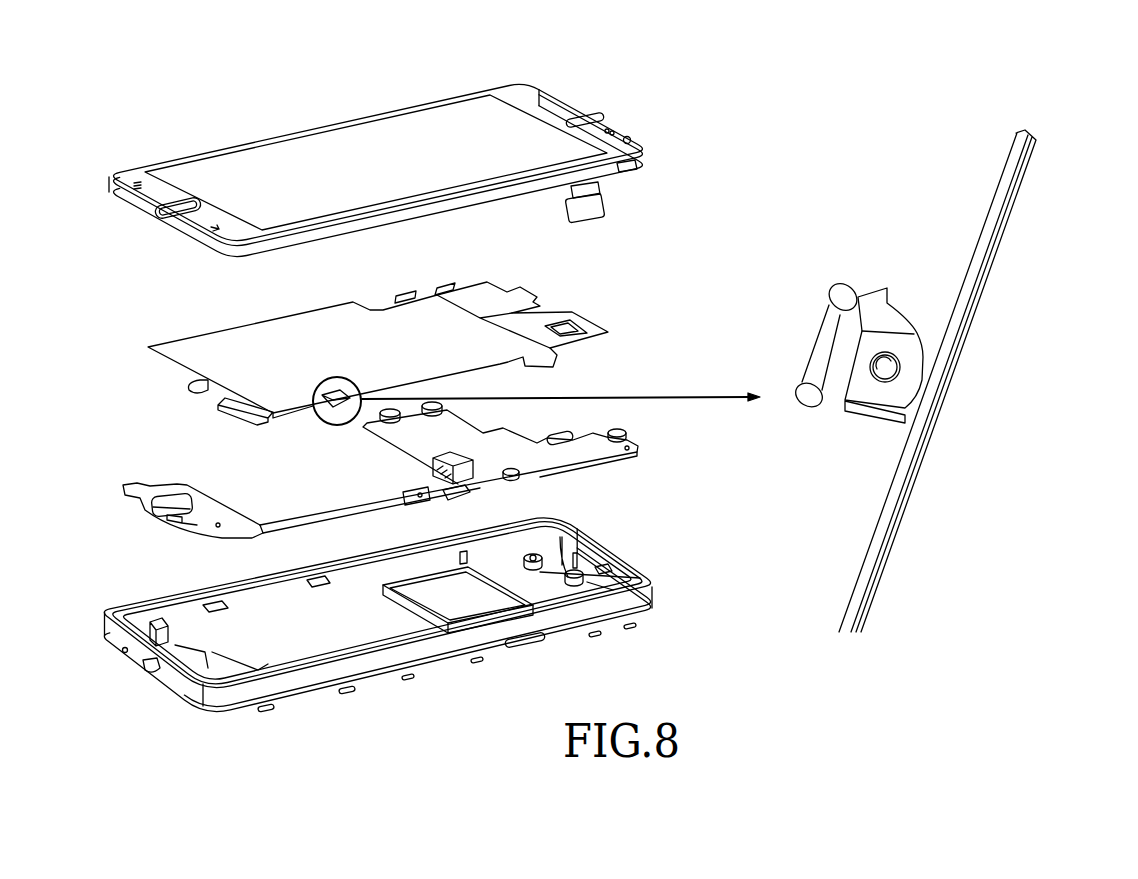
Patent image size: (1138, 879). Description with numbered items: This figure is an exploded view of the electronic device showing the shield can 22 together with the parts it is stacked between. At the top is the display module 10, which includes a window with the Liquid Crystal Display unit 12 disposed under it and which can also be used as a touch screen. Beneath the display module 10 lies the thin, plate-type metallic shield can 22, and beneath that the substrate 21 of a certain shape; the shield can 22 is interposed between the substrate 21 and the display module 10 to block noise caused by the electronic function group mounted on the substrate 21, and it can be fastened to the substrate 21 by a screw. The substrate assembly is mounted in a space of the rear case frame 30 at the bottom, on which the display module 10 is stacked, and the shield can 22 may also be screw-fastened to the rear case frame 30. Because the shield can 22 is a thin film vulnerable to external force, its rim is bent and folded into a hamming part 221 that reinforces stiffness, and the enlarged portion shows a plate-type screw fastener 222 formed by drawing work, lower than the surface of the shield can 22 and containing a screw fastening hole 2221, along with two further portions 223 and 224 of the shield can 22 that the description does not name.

The display module 10 is at (352, 111).
The Liquid Crystal Display (LCD) unit 12 is at (431, 208).
The substrate 21 is at (560, 453).
The shield can 22 is at (203, 362).
The hamming part 221 is at (1006, 198).
The screw fastener 222 is at (915, 357).
The screw fastening hole 2221 is at (887, 367).
The bent portion 223 is at (935, 320).
The protrusion 224 is at (850, 292).
The rear case frame 30 is at (671, 596).